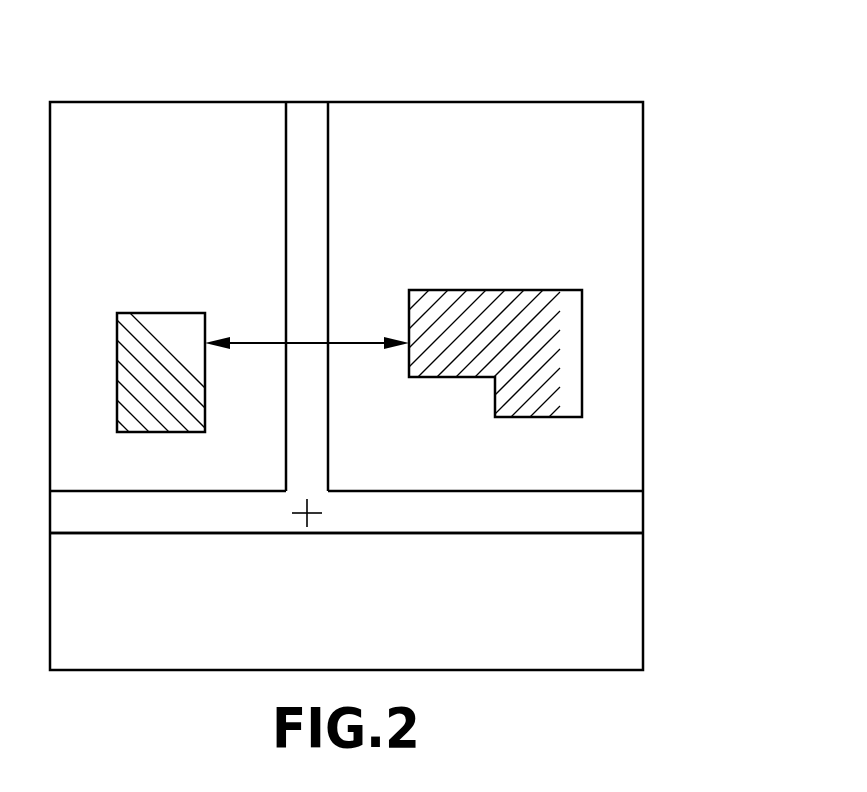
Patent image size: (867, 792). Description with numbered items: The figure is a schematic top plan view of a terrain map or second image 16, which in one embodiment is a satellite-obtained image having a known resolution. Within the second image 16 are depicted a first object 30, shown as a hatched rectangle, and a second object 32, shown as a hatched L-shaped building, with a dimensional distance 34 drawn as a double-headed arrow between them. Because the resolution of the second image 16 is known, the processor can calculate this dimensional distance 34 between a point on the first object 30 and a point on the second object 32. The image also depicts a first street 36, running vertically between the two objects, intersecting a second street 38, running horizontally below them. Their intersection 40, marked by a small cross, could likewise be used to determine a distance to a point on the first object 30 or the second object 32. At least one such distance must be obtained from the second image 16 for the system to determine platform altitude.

The second image 16 is at (436, 92).
The first object 30 is at (152, 300).
The second object 32 is at (480, 280).
The dimensional distance 34 is at (352, 347).
The first street 36 is at (313, 250).
The second street 38 is at (185, 513).
The intersection 40 is at (305, 515).